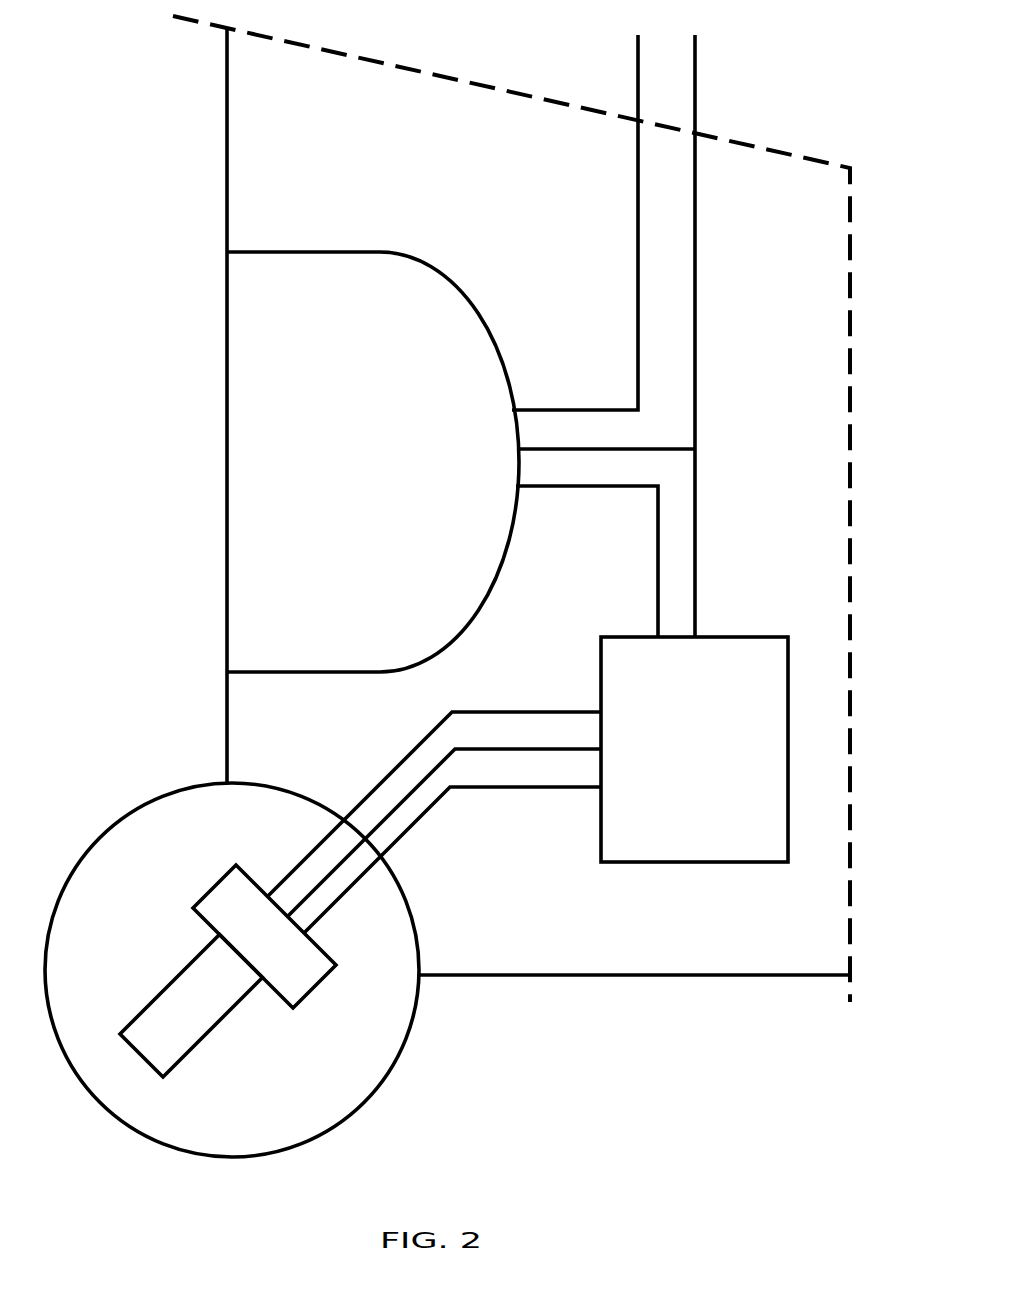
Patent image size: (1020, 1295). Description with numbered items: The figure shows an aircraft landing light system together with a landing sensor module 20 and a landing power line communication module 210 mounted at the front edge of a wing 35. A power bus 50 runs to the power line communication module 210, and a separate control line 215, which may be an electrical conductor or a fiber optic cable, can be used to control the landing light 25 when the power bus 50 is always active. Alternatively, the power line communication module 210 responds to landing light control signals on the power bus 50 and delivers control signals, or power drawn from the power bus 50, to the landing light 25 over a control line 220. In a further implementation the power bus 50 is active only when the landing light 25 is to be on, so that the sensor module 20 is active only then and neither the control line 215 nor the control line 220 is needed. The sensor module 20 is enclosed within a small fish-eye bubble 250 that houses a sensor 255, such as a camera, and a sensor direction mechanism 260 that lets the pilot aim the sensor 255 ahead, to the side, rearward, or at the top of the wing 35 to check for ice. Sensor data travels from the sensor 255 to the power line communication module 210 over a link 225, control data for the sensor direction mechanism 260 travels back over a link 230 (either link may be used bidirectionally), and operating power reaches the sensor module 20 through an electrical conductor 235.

The landing sensor module 20 is at (128, 887).
The landing light 25 is at (322, 311).
The wing 35 is at (328, 127).
The power bus 50 is at (696, 106).
The landing power line communication module 210 is at (703, 852).
The control line 215 is at (637, 85).
The control line 220 is at (622, 486).
The link 225 is at (542, 711).
The link 230 is at (430, 772).
The electrical conductor 235 is at (568, 790).
The fish-eye bubble 250 is at (171, 788).
The sensor 255 is at (211, 1028).
The sensor direction mechanism 260 is at (313, 983).